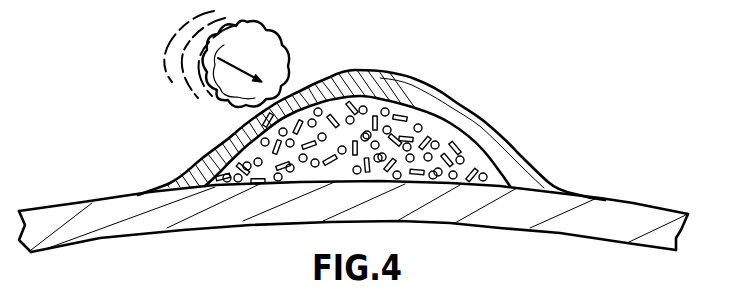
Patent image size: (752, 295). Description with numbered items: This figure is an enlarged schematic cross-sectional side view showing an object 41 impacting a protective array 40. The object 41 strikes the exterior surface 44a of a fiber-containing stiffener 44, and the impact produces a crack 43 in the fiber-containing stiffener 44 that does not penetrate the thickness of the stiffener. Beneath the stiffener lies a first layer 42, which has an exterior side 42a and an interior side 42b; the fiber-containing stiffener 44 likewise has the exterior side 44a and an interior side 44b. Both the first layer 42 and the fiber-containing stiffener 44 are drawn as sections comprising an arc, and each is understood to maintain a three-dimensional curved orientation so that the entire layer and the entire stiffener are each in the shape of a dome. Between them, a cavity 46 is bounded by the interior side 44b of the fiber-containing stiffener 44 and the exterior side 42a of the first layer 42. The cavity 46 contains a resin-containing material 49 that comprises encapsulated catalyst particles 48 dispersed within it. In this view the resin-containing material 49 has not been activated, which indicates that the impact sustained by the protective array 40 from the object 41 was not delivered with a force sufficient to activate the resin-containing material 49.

The protective array 40 is at (545, 62).
The object 41 is at (268, 58).
The first layer 42 is at (374, 231).
The exterior side of first layer 42a is at (633, 200).
The interior side of first layer 42b is at (621, 243).
The crack 43 is at (247, 121).
The fiber-containing stiffener 44 is at (371, 129).
The exterior surface of fiber-containing stiffener 44a is at (416, 81).
The interior side of fiber-containing stiffener 44b is at (219, 146).
The cavity 46 is at (368, 113).
The encapsulated catalyst particles 48 is at (354, 104).
The resin-containing material 49 is at (433, 132).